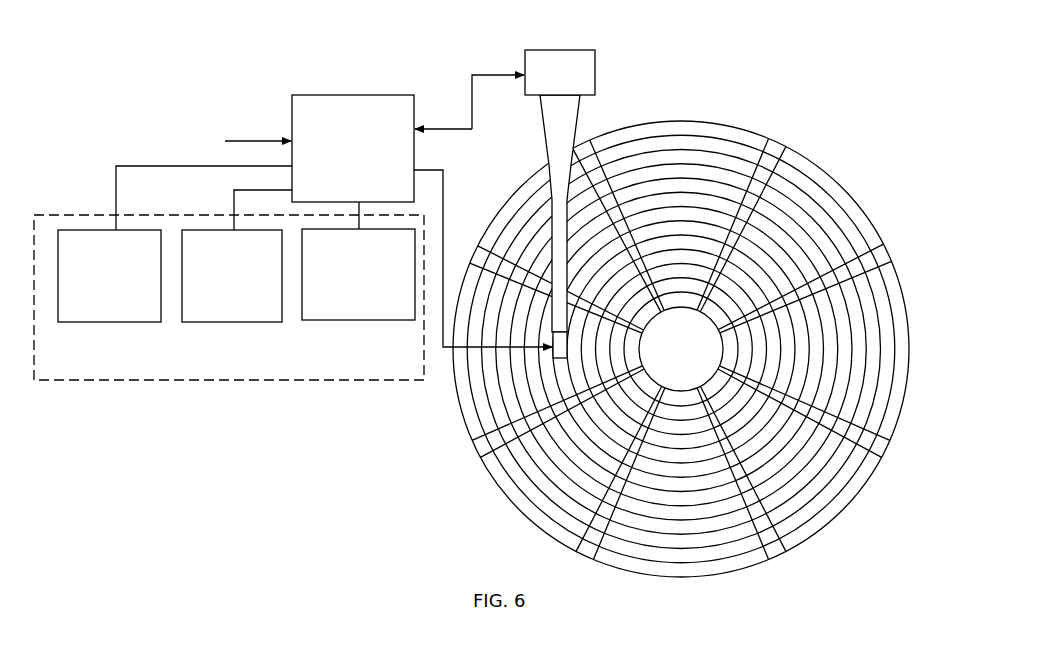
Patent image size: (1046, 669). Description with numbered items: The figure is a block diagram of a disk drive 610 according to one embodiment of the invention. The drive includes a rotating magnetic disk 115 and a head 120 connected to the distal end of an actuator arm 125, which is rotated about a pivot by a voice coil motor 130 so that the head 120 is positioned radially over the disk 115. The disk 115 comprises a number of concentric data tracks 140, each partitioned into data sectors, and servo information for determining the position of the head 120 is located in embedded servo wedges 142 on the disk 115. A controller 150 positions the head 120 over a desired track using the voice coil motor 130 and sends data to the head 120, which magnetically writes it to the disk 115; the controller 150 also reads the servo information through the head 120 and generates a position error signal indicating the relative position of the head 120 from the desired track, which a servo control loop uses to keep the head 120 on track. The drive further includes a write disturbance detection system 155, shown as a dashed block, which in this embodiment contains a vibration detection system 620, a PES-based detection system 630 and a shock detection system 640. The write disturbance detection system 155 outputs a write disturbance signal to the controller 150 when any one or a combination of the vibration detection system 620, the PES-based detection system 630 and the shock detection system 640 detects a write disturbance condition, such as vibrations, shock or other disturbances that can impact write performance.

The disk drive 610 is at (475, 295).
The rotating magnetic disk 115 is at (685, 332).
The concentric data tracks 140 is at (814, 197).
The embedded servo wedges 142 is at (780, 140).
The actuator arm 125 is at (547, 128).
The head 120 is at (552, 360).
The voice coil motor 130 is at (565, 49).
The controller 150 is at (333, 95).
The write disturbance detection system 155 is at (229, 297).
The vibration detection system 620 is at (328, 322).
The PES-based detection system 630 is at (218, 323).
The shock detection system 640 is at (102, 323).